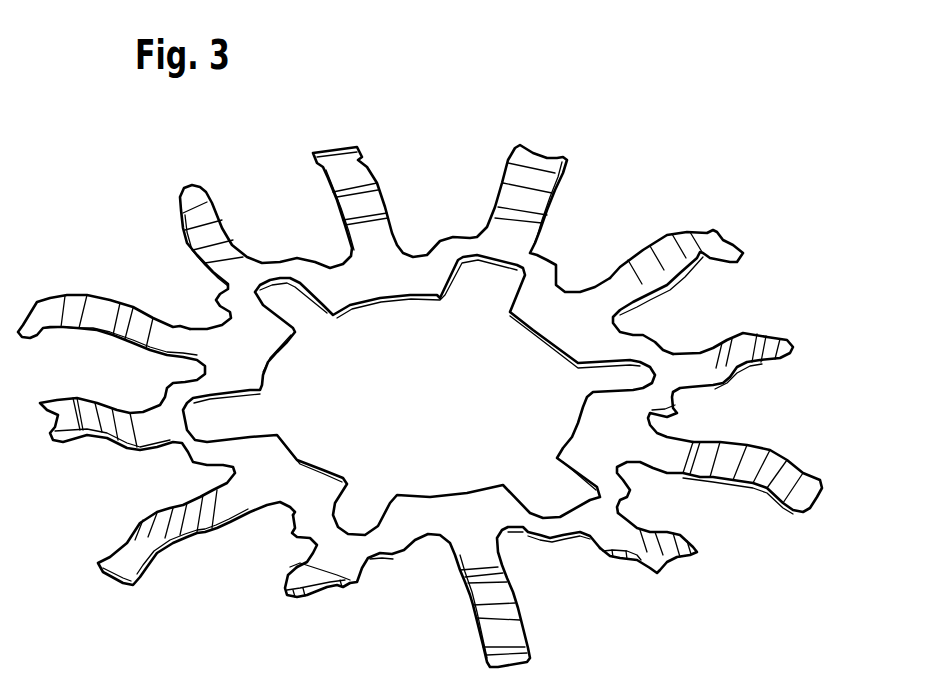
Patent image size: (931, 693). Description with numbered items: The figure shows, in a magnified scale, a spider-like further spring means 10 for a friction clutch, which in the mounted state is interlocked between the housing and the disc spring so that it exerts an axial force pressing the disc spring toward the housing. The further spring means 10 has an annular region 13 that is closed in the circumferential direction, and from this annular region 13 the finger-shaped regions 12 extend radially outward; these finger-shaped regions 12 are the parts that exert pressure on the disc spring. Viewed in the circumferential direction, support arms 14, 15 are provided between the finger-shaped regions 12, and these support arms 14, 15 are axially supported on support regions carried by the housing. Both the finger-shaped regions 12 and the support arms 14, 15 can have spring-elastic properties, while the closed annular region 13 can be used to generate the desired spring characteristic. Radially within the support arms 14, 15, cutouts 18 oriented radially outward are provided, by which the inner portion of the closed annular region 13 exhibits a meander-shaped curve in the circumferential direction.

The further spring means 10 is at (434, 406).
The finger-shaped regions 12 is at (688, 271).
The annular region 13 is at (276, 548).
The support arm 14 is at (749, 380).
The support arm 15 is at (667, 554).
The cutouts 18 is at (419, 395).